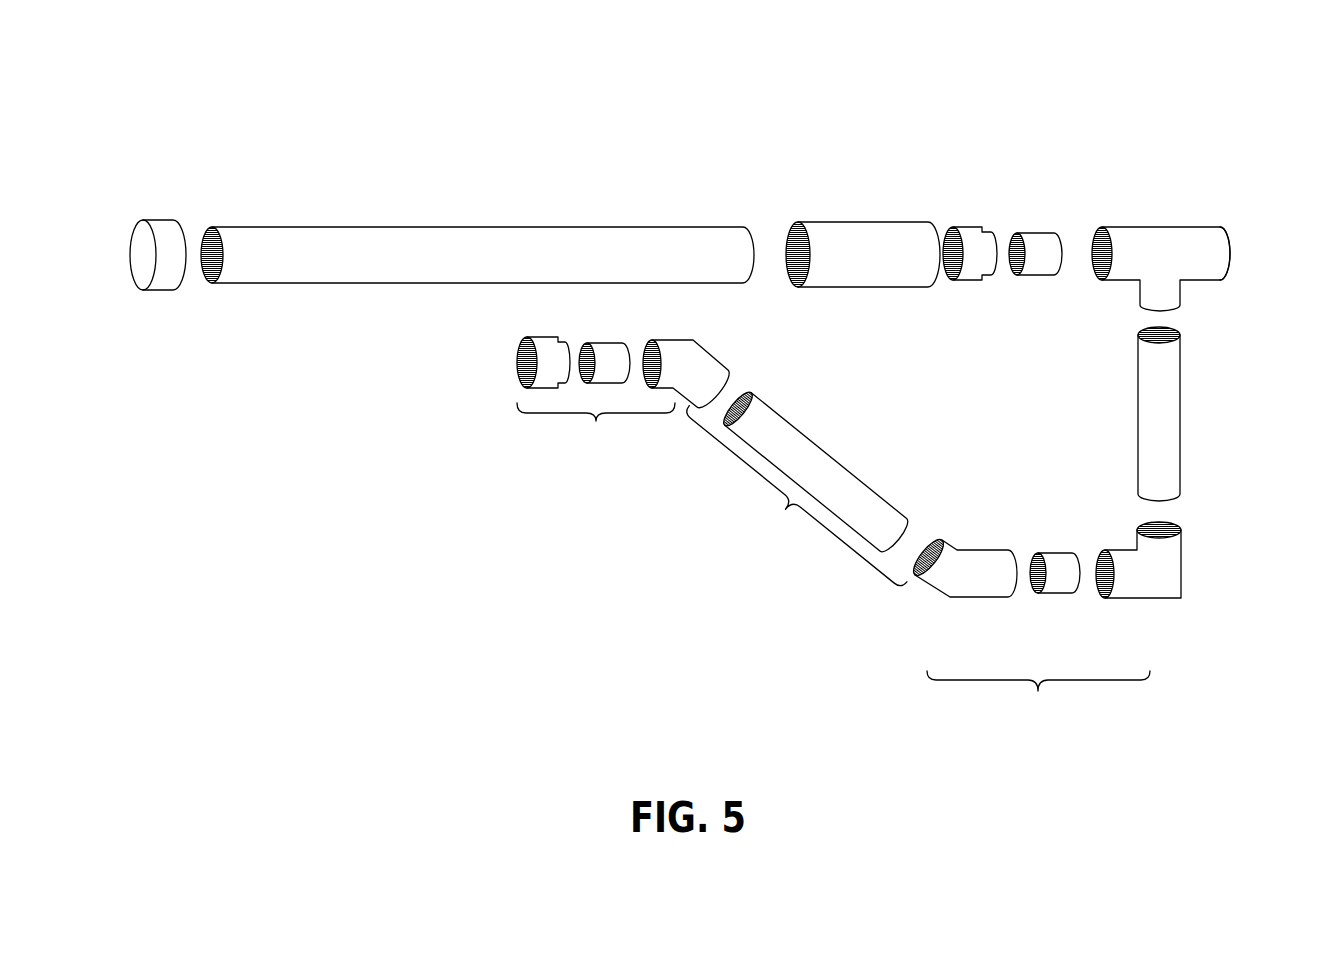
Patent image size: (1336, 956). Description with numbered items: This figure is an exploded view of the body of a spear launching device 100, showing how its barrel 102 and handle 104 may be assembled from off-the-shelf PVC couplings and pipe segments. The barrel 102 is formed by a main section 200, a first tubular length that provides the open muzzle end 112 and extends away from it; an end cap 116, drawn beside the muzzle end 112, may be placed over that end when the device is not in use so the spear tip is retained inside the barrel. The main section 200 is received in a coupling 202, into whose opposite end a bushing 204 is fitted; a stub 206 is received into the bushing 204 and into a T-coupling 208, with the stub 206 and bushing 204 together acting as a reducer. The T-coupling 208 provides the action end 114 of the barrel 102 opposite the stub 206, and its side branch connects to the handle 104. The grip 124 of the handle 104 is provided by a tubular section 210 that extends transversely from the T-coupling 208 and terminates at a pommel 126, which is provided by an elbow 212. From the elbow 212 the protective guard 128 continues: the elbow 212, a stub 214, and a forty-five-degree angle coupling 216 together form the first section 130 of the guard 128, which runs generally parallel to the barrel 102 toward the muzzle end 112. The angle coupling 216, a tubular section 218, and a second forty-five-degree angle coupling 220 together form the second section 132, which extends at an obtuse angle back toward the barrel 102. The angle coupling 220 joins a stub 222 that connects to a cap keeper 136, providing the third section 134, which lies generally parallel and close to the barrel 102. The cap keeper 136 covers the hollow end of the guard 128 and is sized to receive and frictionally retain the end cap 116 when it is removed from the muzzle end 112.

The spear launching device 100 is at (343, 117).
The barrel 102 is at (497, 188).
The handle 104 is at (1200, 718).
The muzzle end 112 is at (209, 227).
The action end 114 is at (1233, 253).
The end cap 116 is at (157, 223).
The grip 124 is at (1245, 422).
The pommel 126 is at (1163, 620).
The protective guard 128 is at (863, 628).
The first section 130 is at (1038, 696).
The second section 132 is at (792, 502).
The third section 134 is at (596, 425).
The cap keeper 136 is at (547, 342).
The main section 200 is at (623, 226).
The coupling 202 is at (848, 232).
The bushing 204 is at (963, 232).
The stub 206 is at (1035, 238).
The T-coupling 208 is at (1148, 225).
The tubular section 210 is at (1182, 466).
The elbow 212 is at (1167, 562).
The stub 214 is at (1055, 582).
The angle coupling 216 is at (967, 582).
The tubular section 218 is at (822, 465).
The angle coupling 220 is at (687, 355).
The stub 222 is at (613, 350).